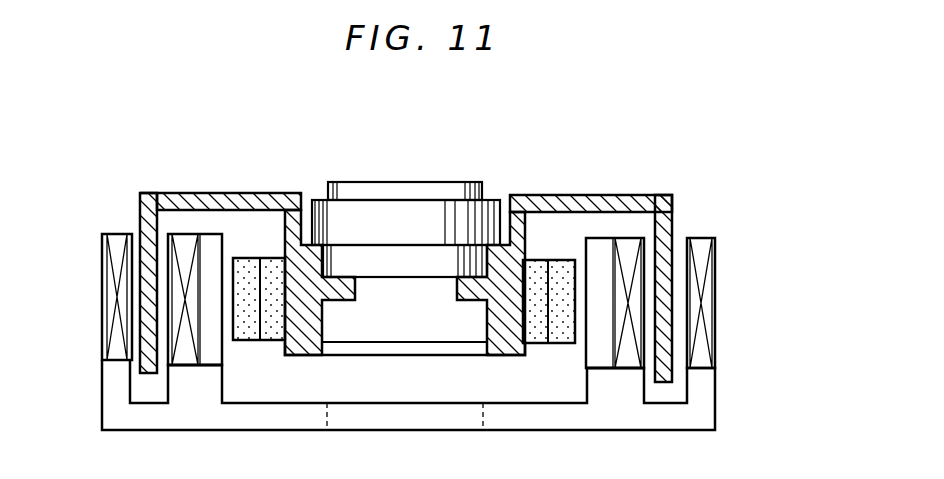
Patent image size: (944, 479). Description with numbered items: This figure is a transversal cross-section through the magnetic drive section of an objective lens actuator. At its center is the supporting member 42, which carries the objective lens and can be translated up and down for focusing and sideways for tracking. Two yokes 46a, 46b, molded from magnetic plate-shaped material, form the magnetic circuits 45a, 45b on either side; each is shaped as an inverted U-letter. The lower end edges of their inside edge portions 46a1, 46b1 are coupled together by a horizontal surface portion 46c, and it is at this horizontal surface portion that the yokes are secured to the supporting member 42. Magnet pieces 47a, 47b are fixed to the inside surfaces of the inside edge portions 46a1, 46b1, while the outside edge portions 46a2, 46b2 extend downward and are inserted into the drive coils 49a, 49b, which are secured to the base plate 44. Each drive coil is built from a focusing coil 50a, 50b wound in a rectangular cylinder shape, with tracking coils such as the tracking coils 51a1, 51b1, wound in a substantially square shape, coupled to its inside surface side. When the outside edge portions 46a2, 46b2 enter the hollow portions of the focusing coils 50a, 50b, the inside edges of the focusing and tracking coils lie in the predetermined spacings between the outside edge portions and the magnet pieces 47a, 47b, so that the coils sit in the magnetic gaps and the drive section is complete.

The base plate 44 is at (706, 414).
The supporting member 42 is at (322, 353).
The horizontal surface portion 46c is at (413, 352).
The magnetic circuit 45b is at (226, 241).
The yoke 46b is at (217, 193).
The inside edge portion 46b1 is at (282, 193).
The outside edge portion 46b2 is at (140, 224).
The magnetic circuit 45a is at (599, 249).
The yoke 46a is at (592, 195).
The inside edge portion 46a1 is at (510, 241).
The outside edge portion 46a2 is at (672, 248).
The magnet piece 47b is at (253, 341).
The magnet piece 47a is at (538, 344).
The drive coil 49b is at (102, 308).
The drive coil 49a is at (716, 290).
The tracking coil 51b1 is at (212, 368).
The tracking coil 51a1 is at (600, 370).
The focusing coil 50b is at (190, 368).
The focusing coil 50a is at (630, 364).